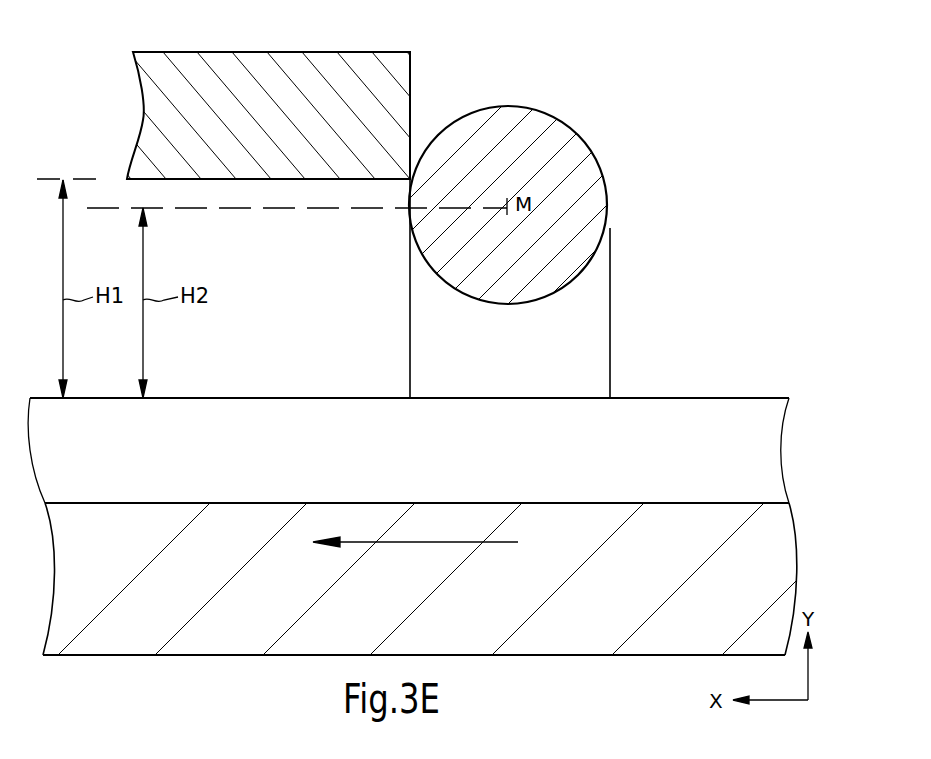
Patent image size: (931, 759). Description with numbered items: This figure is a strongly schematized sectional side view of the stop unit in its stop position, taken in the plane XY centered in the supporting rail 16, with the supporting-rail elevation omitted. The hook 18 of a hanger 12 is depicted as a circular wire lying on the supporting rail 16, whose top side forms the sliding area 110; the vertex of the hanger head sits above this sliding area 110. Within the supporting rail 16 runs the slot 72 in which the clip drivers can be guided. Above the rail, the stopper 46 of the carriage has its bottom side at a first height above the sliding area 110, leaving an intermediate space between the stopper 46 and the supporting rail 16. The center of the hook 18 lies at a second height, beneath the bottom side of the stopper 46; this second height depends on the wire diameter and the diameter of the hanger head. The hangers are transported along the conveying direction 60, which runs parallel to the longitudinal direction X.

The stopper 46 is at (282, 52).
The hanger 12 is at (576, 115).
The hook 18 is at (610, 278).
The sliding area 110 is at (715, 397).
The slot 72 is at (724, 463).
The supporting rail 16 is at (643, 653).
The conveying direction 60 is at (428, 542).